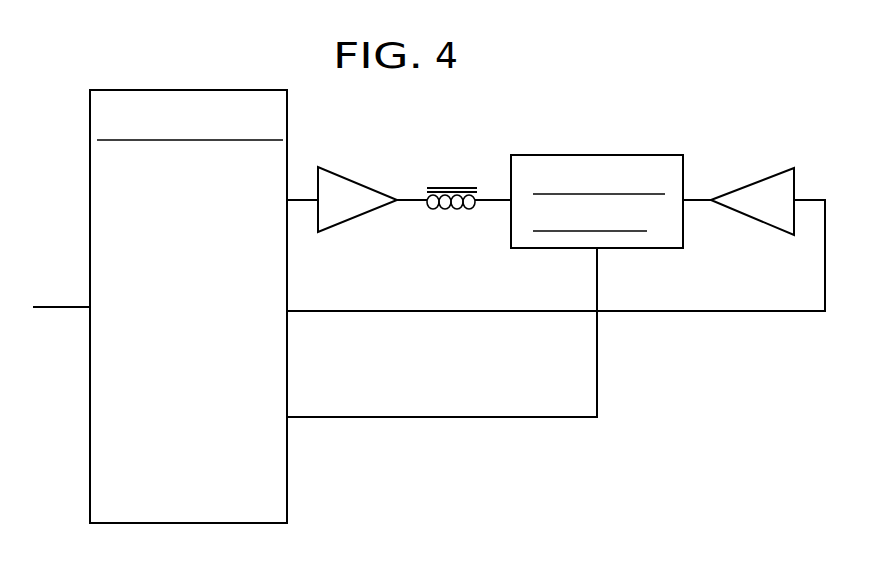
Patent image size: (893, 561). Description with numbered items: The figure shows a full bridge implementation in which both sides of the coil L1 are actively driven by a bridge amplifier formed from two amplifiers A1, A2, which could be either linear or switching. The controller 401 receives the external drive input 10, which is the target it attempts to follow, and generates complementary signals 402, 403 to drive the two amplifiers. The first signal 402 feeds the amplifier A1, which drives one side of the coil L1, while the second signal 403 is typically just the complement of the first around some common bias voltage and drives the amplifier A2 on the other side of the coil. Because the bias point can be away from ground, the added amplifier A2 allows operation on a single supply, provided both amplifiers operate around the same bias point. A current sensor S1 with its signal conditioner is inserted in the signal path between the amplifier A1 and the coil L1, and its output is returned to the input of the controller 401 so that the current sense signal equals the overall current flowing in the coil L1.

The controller 401 is at (248, 90).
The signal 402 is at (293, 200).
The signal 403 is at (293, 310).
The drive input 10 is at (83, 307).
The amplifier A1 is at (340, 172).
The coil L1 is at (452, 187).
The current sensor S1 is at (582, 155).
The amplifier A2 is at (768, 177).